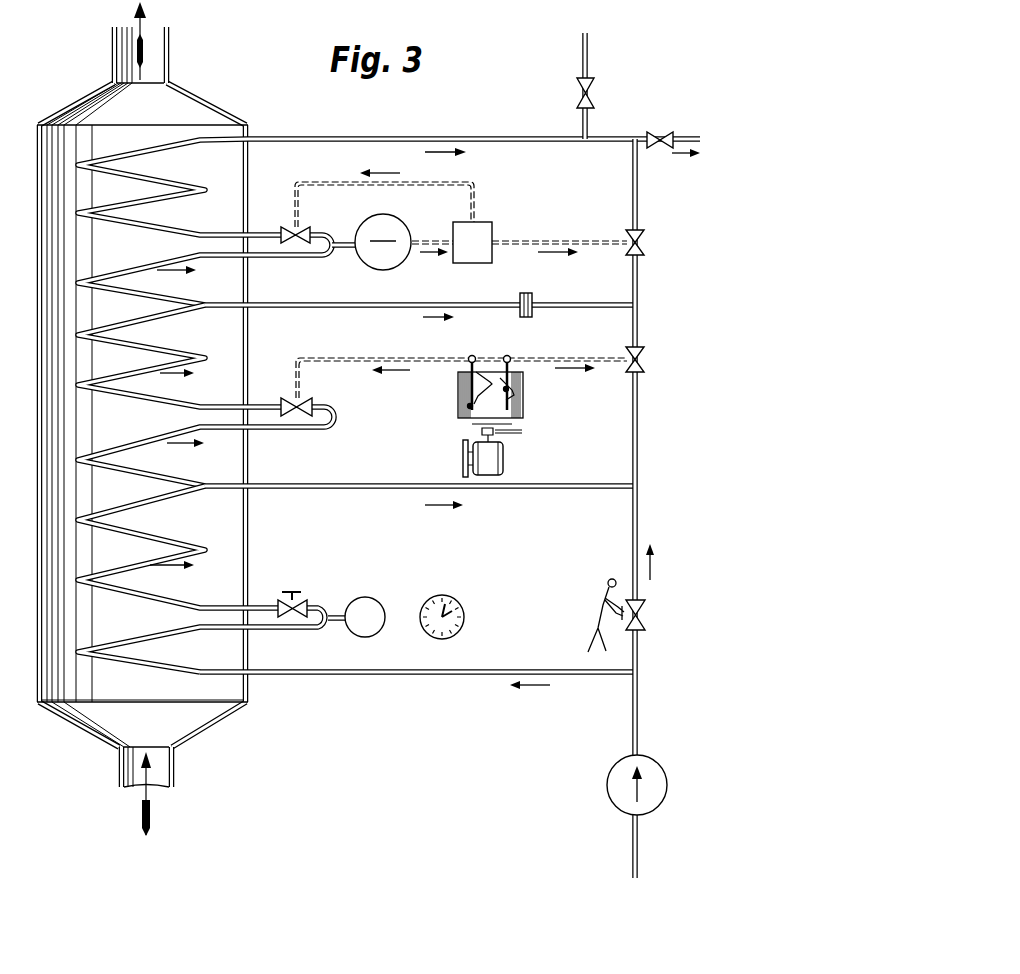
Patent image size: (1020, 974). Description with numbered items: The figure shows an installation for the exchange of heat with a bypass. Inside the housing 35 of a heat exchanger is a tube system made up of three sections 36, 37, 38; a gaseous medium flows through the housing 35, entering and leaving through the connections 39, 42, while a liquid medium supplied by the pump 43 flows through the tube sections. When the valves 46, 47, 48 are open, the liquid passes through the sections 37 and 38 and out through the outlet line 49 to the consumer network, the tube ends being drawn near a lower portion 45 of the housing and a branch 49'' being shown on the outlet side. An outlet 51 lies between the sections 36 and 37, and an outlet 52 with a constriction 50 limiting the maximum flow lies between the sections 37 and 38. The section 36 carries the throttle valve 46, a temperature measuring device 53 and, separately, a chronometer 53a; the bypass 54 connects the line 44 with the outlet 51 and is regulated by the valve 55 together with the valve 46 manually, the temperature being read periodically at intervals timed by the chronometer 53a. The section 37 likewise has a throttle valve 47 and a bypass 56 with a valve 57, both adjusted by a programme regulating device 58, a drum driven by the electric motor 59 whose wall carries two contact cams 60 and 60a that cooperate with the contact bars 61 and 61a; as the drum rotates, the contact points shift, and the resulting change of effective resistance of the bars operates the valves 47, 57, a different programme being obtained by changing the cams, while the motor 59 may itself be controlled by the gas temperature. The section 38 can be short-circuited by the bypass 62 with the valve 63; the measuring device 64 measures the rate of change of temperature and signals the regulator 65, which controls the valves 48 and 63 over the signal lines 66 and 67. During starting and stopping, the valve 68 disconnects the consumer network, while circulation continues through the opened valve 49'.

The housing 35 is at (82, 726).
The tube section 36 is at (90, 652).
The tube section 37 is at (118, 462).
The tube section 38 is at (118, 274).
The connection 39 is at (178, 772).
The connection 42 is at (170, 55).
The pump 43 is at (610, 798).
The line 44 is at (470, 677).
The vessel bottom 45 is at (207, 678).
The throttle valve 46 is at (299, 581).
The throttle valve 47 is at (330, 403).
The valve 48 is at (298, 228).
The outlet line 49 is at (473, 128).
The valve 49' is at (611, 85).
The branch line 49'' is at (609, 86).
The constriction 50 is at (532, 295).
The outlet 51 is at (407, 482).
The outlet 52 is at (392, 307).
The temperature measuring device 53 is at (365, 597).
The chronometer 53a is at (466, 617).
The bypass 54 is at (633, 550).
The valve 55 is at (645, 612).
The bypass 56 is at (638, 330).
The valve 57 is at (644, 367).
The programme regulating device 58 is at (524, 388).
The electric motor 59 is at (504, 460).
The contact cam 60 is at (478, 387).
The contact cam 60a is at (522, 402).
The contact bar 61 is at (472, 355).
The contact bar 61a is at (507, 355).
The bypass 62 is at (638, 190).
The valve 63 is at (644, 246).
The measuring device 64 is at (403, 263).
The regulator 65 is at (482, 223).
The signal line 66 is at (440, 184).
The signal line 67 is at (550, 238).
The valve 68 is at (660, 130).